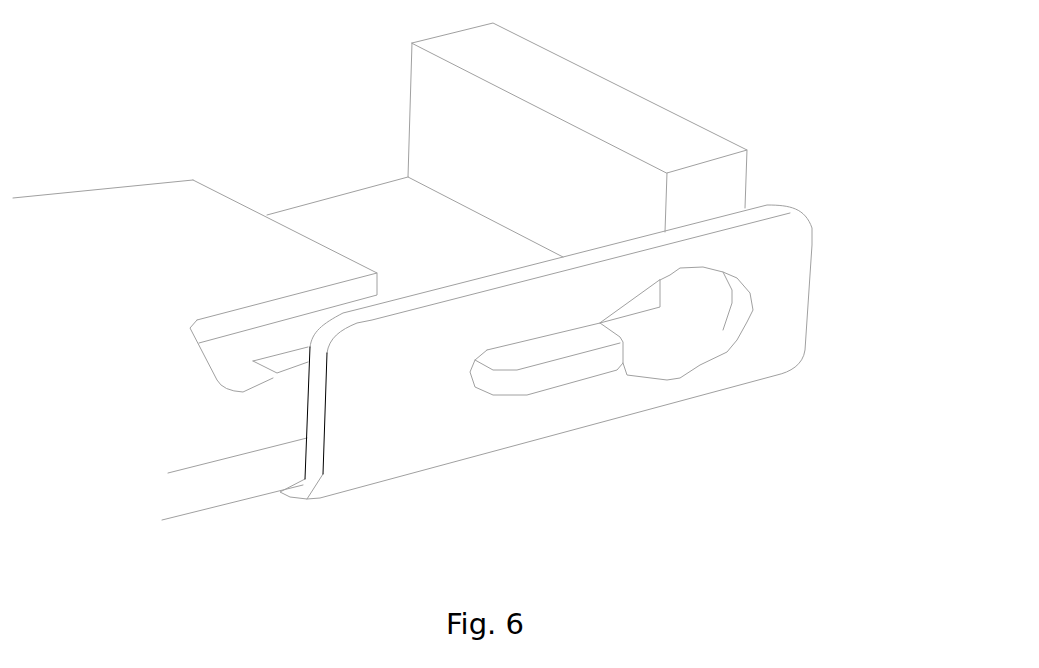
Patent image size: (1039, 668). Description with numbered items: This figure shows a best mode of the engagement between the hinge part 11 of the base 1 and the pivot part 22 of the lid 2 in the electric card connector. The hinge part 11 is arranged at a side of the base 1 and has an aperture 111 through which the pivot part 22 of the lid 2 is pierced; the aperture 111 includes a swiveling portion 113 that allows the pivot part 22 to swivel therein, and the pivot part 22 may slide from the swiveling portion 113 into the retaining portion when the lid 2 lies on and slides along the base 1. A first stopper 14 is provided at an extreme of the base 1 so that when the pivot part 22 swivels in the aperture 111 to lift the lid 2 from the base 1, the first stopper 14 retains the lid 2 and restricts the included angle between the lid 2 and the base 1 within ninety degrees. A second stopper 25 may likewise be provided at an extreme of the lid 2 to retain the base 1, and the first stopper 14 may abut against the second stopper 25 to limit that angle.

The base 1 is at (353, 227).
The lid 2 is at (192, 485).
The hinge part 11 is at (772, 335).
The first stopper 14 is at (568, 86).
The pivot part 22 is at (557, 372).
The second stopper 25 is at (237, 227).
The aperture 111 is at (598, 323).
The swiveling portion 113 is at (680, 337).